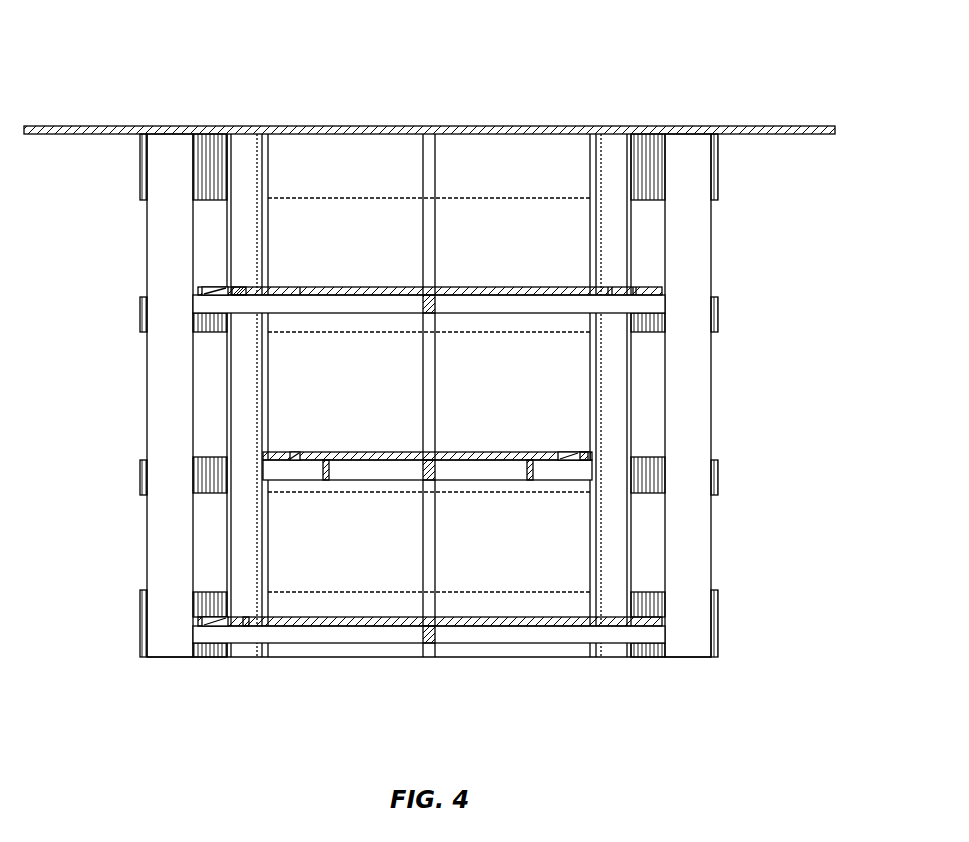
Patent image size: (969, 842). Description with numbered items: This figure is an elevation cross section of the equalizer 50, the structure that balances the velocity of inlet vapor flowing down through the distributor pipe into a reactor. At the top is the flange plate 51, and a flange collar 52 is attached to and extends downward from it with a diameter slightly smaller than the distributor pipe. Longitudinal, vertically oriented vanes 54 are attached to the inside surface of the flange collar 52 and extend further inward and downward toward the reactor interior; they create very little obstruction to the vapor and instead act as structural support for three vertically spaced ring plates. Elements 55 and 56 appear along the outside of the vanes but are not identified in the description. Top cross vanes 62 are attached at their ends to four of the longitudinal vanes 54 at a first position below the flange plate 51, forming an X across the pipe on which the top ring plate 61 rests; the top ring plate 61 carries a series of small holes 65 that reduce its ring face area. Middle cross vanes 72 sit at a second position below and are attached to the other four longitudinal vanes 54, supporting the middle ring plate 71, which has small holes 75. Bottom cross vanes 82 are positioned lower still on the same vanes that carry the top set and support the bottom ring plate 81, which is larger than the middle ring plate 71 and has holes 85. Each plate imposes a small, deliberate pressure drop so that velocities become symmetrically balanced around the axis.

The equalizer 50 is at (204, 48).
The flange plate 51 is at (802, 126).
The flange collar 52 is at (140, 165).
The longitudinal vanes 54 is at (153, 247).
The mounting strip 55 is at (140, 306).
The lower mounting strip 56 is at (140, 607).
The top ring plate 61 is at (455, 287).
The top cross vanes 62 is at (332, 298).
The small holes 65 is at (232, 288).
The middle ring plate 71 is at (402, 453).
The middle cross vanes 72 is at (372, 480).
The small holes 75 is at (590, 453).
The bottom ring plate 81 is at (455, 616).
The bottom cross vanes 82 is at (330, 632).
The holes 85 is at (230, 617).